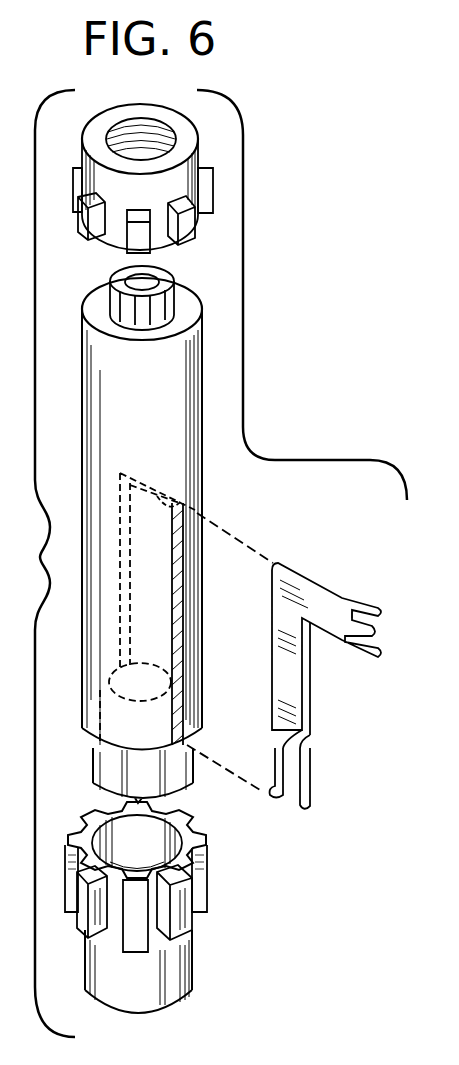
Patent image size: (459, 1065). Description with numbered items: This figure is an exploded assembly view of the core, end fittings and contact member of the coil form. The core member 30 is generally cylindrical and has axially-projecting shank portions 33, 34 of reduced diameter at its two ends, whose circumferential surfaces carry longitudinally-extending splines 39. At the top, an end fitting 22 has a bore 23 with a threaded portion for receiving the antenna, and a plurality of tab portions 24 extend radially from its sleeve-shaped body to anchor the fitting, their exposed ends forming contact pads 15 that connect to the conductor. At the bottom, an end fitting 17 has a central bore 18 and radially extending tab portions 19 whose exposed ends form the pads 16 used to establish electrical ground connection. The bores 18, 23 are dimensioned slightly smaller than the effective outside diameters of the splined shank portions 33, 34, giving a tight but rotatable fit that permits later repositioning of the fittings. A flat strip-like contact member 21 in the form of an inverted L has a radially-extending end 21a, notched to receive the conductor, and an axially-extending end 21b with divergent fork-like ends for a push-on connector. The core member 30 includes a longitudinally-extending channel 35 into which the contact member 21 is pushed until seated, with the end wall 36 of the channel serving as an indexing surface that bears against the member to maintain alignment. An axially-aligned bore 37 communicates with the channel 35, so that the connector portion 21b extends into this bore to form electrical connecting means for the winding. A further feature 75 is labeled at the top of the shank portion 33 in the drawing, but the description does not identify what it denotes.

The contact pads 15 is at (141, 165).
The contact pads 16 is at (172, 884).
The end fitting 17 is at (182, 980).
The central bore 18 is at (165, 843).
The tab portions 19 is at (200, 898).
The contact member 21 is at (343, 686).
The radially-extending end 21a is at (367, 650).
The axially-extending end 21b is at (297, 782).
The end fitting 22 is at (185, 172).
The bore 23 is at (150, 135).
The tab portions 24 is at (205, 200).
The core member 30 is at (158, 533).
The shank portion 33 is at (185, 300).
The shank portion 34 is at (187, 773).
The channel 35 is at (182, 595).
The end wall 36 is at (205, 510).
The bore 37 is at (95, 715).
The splines 39 is at (110, 305).
The bore of boss 75 is at (125, 278).